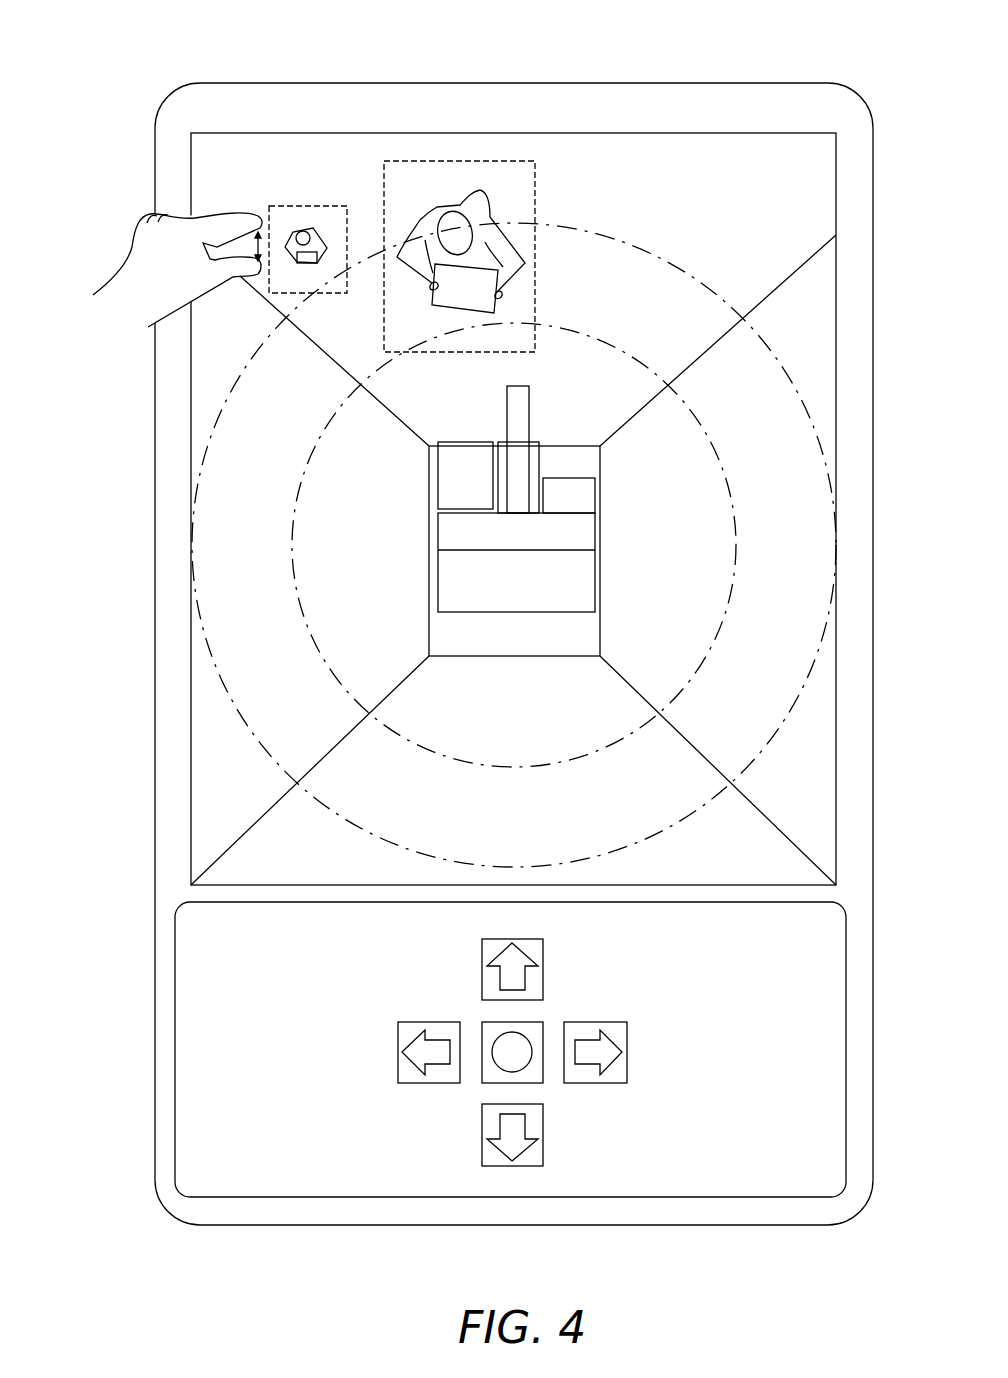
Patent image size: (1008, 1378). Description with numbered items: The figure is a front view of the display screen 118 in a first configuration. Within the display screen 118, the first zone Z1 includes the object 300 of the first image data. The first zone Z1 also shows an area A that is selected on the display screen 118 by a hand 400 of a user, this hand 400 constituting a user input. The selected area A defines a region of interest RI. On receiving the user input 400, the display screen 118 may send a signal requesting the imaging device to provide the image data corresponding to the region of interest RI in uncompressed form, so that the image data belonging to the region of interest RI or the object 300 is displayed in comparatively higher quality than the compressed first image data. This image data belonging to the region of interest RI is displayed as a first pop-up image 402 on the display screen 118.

The display screen 118 is at (155, 468).
The object 300 is at (213, 156).
The hand 400 is at (130, 246).
The first pop-up image 402 is at (458, 161).
The region of interest RI is at (303, 232).
The area A is at (328, 206).
The first zone Z1 is at (655, 175).